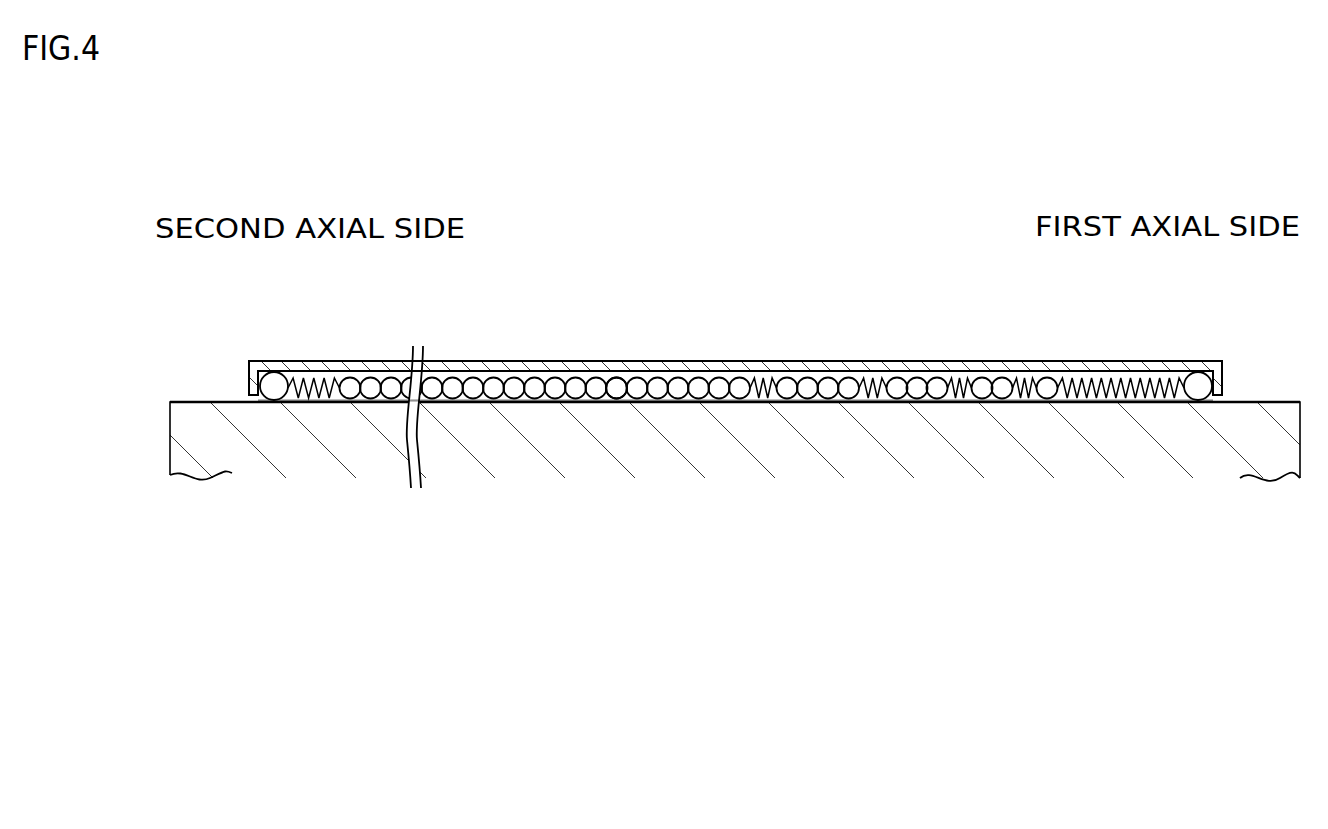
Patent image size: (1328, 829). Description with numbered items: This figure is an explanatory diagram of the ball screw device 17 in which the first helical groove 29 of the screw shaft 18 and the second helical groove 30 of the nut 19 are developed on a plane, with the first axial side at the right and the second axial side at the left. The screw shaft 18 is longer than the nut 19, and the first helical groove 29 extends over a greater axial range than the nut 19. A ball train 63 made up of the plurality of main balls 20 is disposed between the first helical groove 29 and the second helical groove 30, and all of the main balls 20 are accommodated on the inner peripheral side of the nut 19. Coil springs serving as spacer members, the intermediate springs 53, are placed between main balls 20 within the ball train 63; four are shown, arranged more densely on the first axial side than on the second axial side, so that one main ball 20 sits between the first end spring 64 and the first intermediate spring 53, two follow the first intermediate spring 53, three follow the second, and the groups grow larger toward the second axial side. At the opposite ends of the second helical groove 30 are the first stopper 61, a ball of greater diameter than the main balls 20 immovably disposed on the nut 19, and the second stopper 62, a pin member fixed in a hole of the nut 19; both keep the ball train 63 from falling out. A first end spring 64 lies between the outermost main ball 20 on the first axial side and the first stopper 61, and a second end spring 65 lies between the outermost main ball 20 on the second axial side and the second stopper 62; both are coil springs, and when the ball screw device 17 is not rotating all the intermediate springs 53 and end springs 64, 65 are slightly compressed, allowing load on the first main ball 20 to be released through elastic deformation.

The ball screw device 17 is at (1098, 341).
The screw shaft 18 is at (377, 445).
The nut 19 is at (673, 367).
The main ball 20 is at (345, 386).
The first helical groove 29 is at (527, 401).
The second helical groove 30 is at (610, 382).
The intermediate spring 53 is at (760, 403).
The first stopper 61 is at (1197, 393).
The second stopper 62 is at (271, 390).
The ball train 63 is at (480, 403).
The first end spring 64 is at (1085, 403).
The second end spring 65 is at (306, 402).